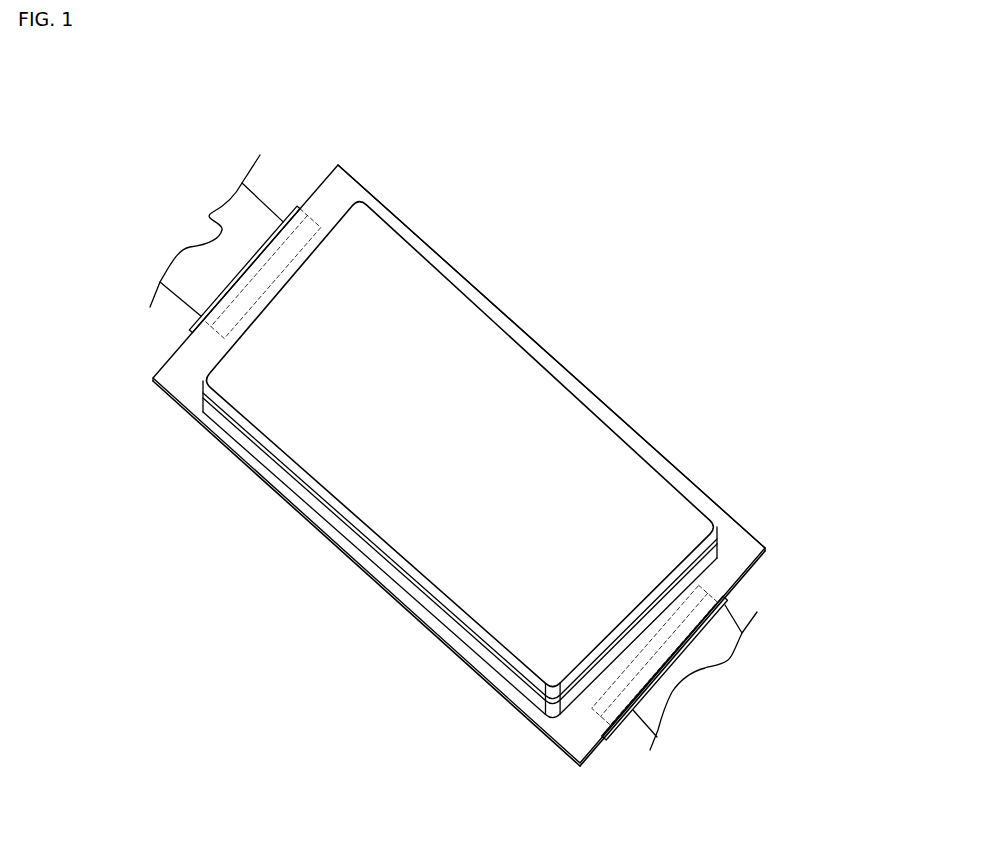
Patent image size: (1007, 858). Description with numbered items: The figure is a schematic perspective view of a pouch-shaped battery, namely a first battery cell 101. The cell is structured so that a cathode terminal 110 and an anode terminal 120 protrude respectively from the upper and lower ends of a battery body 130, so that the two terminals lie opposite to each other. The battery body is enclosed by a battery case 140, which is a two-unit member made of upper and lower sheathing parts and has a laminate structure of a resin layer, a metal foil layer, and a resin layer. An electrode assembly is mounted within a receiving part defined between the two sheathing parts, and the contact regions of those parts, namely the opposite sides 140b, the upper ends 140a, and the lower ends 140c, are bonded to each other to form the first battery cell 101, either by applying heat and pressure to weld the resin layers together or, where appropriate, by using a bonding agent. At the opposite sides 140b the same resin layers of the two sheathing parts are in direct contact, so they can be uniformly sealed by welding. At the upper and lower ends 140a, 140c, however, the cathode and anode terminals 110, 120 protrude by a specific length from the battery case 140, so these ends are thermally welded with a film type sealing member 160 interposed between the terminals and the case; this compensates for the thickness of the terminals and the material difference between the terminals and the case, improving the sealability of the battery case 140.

The first battery cell 101 is at (91, 124).
The cathode terminal 110 is at (230, 253).
The anode terminal 120 is at (707, 665).
The battery body 130 is at (530, 375).
The battery case 140 is at (748, 532).
The upper ends 140a is at (340, 188).
The opposite sides 140b is at (463, 653).
The lower ends 140c is at (588, 725).
The film type sealing member 160 is at (728, 600).